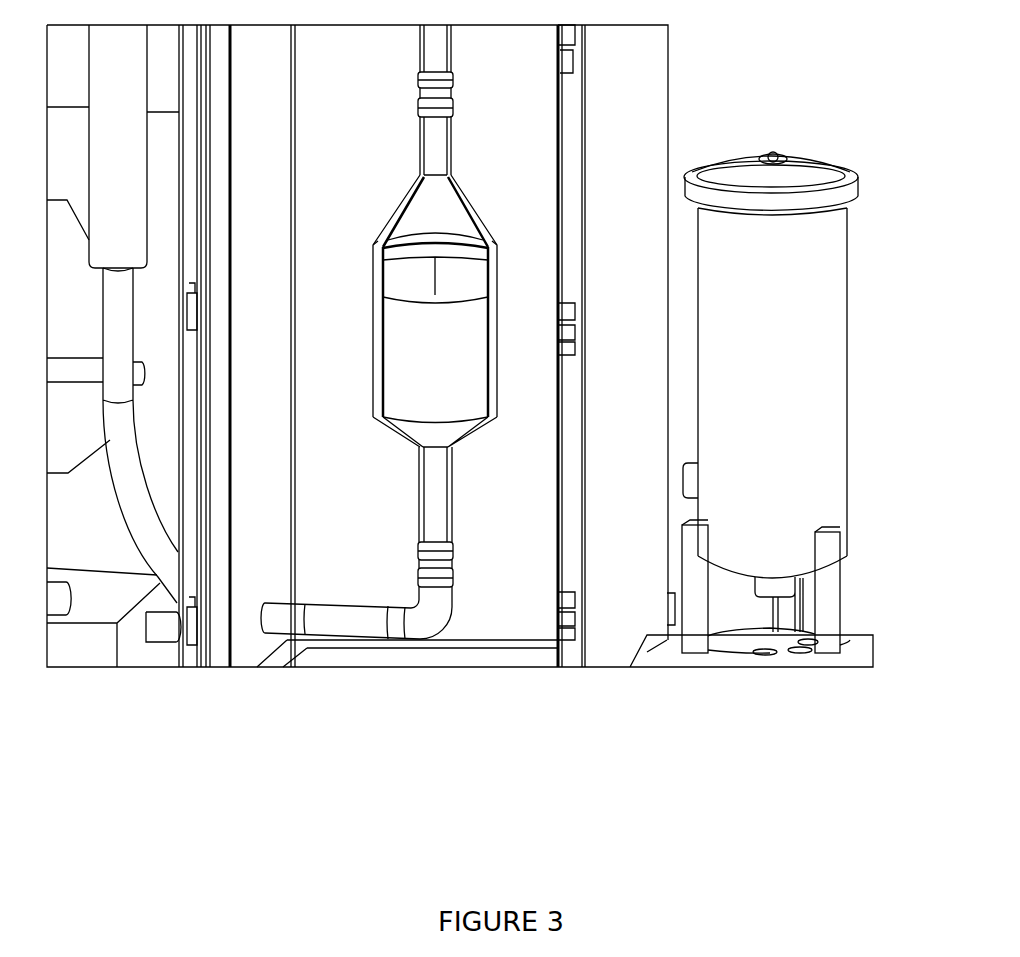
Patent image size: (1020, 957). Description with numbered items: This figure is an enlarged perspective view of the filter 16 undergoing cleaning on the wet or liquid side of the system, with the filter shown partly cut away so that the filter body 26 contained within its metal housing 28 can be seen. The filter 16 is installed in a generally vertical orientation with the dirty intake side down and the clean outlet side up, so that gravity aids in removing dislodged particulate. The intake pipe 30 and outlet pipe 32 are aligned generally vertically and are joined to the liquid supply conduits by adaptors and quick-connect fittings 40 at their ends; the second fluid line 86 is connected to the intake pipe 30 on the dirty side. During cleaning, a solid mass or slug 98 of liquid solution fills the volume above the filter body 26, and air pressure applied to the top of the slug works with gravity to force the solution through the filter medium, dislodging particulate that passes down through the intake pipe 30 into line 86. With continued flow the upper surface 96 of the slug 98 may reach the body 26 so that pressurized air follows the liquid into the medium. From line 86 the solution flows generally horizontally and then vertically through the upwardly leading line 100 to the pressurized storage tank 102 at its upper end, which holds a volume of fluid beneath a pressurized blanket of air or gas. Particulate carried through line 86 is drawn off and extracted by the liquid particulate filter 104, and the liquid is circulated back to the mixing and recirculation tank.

The filter 16 is at (394, 210).
The filter body 26 is at (400, 273).
The metal housing 28 is at (373, 315).
The intake pipe 30 is at (419, 500).
The outlet pipe 32 is at (420, 148).
The quick-connect fittings 40 is at (420, 90).
The second fluid line 86 is at (367, 606).
The upper surface of the slug 96 is at (475, 297).
The slug 98 is at (405, 372).
The upwardly leading line 100 is at (110, 440).
The pressurized storage tank 102 is at (88, 232).
The liquid particulate filter 104 is at (846, 380).